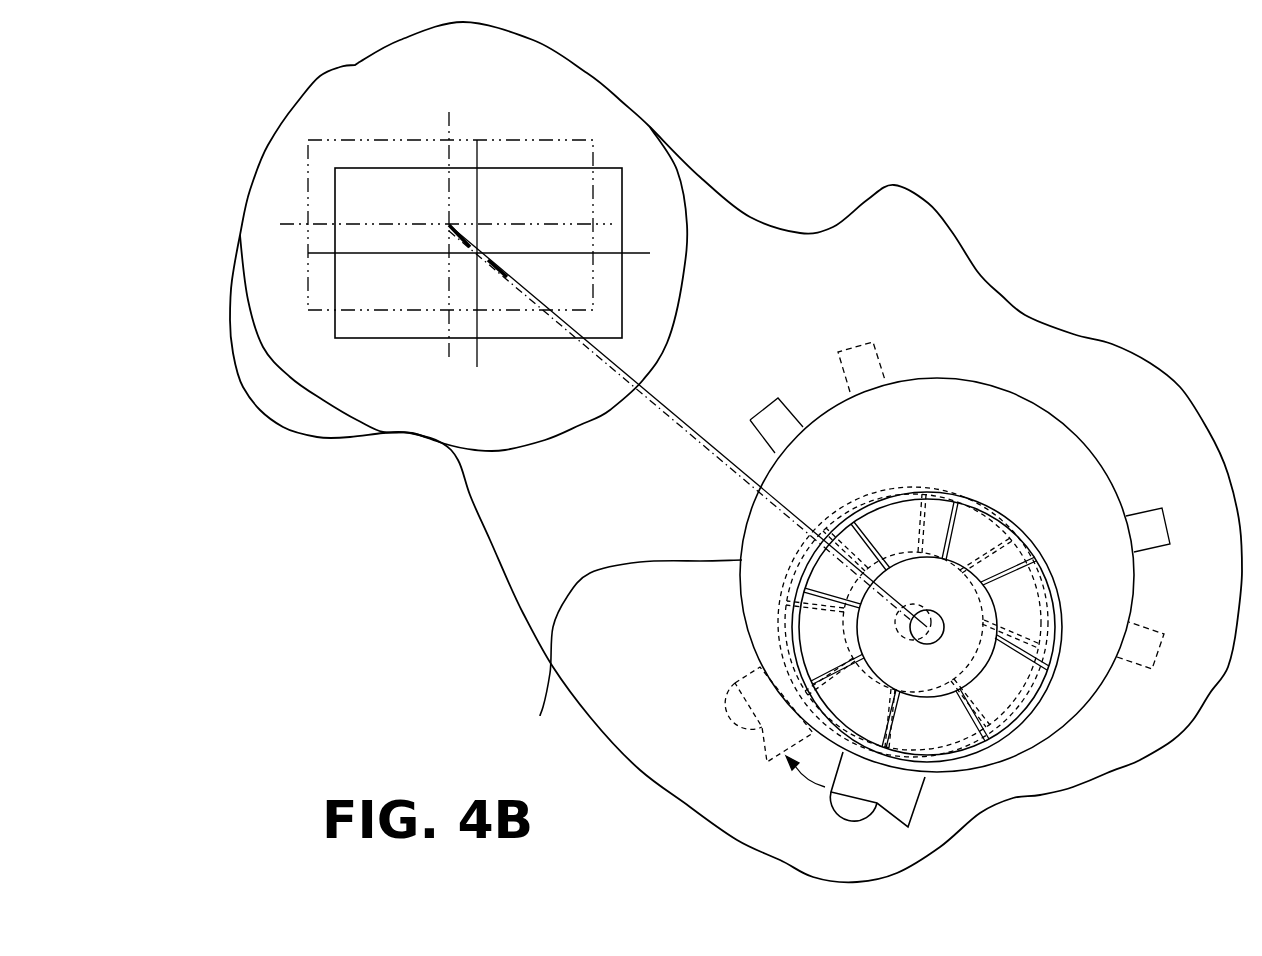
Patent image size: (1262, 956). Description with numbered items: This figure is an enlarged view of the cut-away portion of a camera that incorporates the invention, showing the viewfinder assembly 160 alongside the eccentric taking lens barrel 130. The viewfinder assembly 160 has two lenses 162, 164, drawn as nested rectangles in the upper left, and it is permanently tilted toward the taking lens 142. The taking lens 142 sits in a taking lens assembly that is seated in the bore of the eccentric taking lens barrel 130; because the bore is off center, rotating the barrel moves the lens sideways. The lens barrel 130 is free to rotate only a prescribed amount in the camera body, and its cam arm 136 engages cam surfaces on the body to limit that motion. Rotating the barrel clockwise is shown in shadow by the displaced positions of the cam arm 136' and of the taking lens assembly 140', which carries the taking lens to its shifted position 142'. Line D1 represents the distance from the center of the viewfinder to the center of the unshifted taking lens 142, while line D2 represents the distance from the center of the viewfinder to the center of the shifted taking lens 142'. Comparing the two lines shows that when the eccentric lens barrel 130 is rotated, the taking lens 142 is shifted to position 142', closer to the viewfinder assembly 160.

The eccentric taking lens barrel 130 is at (541, 714).
The cam arm 136 is at (927, 836).
The displaced cam arm 136' is at (713, 742).
The displaced taking lens assembly 140' is at (828, 622).
The taking lens 142 is at (937, 616).
The shifted taking lens 142' is at (913, 587).
The viewfinder assembly 160 is at (255, 317).
The viewfinder lens 162 is at (542, 140).
The viewfinder lens 164 is at (387, 338).
The distance line D1 is at (662, 410).
The distance line D2 is at (697, 433).